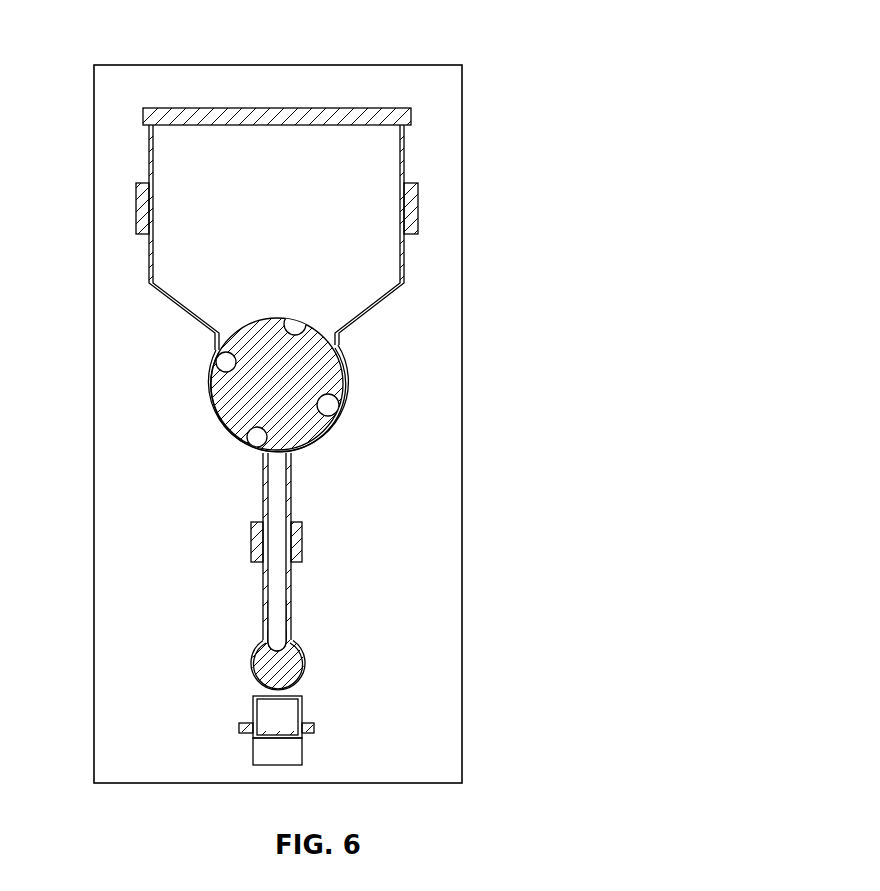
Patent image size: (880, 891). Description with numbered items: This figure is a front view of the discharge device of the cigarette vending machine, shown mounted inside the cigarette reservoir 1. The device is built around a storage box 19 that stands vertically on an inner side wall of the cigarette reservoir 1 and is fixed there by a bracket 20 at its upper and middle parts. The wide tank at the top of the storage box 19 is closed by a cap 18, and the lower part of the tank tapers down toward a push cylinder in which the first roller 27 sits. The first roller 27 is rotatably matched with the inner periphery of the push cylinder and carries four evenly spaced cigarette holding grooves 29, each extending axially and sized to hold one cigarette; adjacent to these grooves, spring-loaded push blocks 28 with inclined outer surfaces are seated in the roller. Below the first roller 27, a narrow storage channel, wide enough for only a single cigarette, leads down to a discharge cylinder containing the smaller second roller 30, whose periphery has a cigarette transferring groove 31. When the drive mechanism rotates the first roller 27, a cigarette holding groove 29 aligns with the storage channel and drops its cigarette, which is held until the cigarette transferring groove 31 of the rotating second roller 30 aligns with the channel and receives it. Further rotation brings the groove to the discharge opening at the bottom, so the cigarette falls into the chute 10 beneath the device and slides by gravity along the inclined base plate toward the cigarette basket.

The cigarette reservoir 1 is at (108, 355).
The chute 10 is at (283, 715).
The cap 18 is at (250, 116).
The storage box 19 is at (403, 154).
The bracket 20 is at (140, 213).
The first roller 27 is at (325, 383).
The push block 28 is at (327, 330).
The cigarette holding groove 29 is at (297, 331).
The second roller 30 is at (293, 669).
The cigarette transferring groove 31 is at (281, 643).